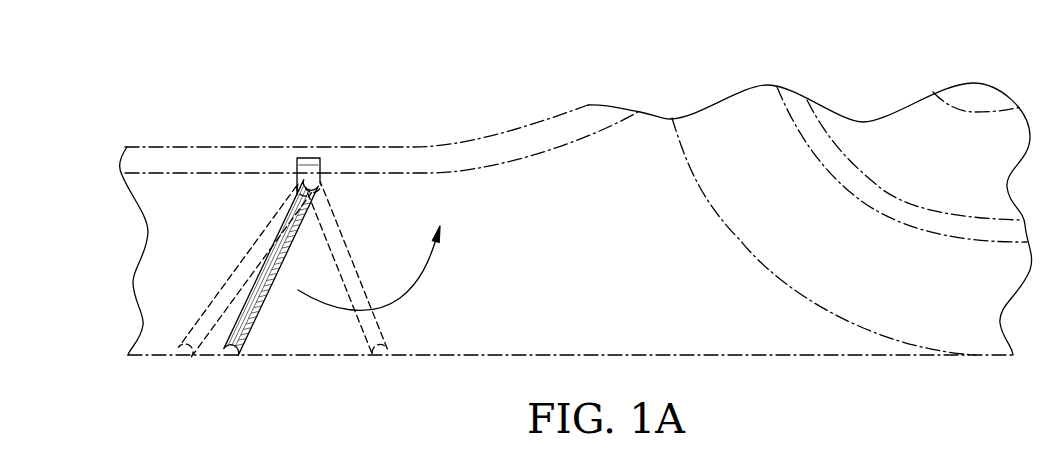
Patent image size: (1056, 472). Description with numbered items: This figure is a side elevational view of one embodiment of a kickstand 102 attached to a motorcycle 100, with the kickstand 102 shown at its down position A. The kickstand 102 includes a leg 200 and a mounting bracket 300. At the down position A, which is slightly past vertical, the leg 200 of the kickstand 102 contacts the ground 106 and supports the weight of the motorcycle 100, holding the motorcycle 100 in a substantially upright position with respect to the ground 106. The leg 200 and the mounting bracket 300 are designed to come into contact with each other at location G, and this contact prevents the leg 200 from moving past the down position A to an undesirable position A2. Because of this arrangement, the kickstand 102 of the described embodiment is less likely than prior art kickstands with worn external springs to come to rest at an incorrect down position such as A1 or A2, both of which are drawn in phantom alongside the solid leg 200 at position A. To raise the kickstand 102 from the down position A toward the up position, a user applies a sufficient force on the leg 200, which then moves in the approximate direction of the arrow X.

The motorcycle 100 is at (693, 123).
The kickstand 102 is at (228, 225).
The ground 106 is at (837, 355).
The leg 200 is at (262, 308).
The mounting bracket 300 is at (310, 158).
The location G is at (301, 193).
The down position A is at (227, 365).
The incorrect down position A1 is at (351, 282).
The incorrect down position A2 is at (236, 282).
The arrow X is at (369, 268).